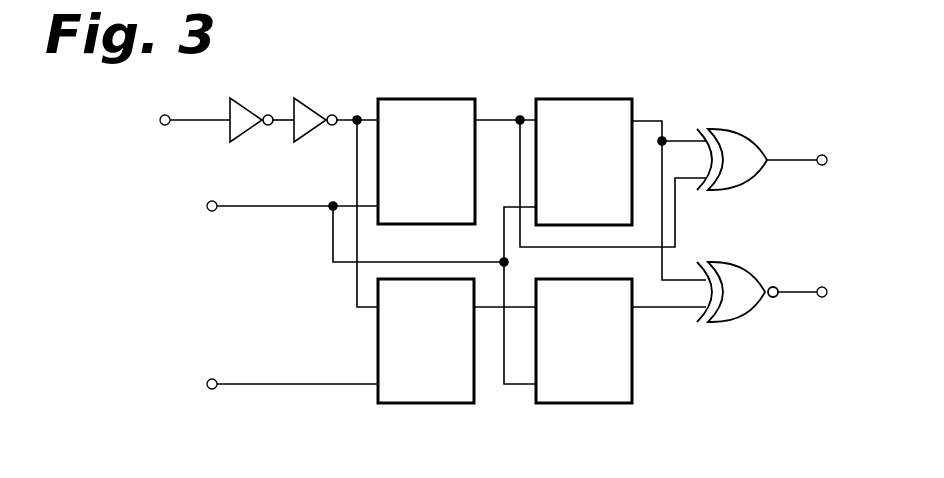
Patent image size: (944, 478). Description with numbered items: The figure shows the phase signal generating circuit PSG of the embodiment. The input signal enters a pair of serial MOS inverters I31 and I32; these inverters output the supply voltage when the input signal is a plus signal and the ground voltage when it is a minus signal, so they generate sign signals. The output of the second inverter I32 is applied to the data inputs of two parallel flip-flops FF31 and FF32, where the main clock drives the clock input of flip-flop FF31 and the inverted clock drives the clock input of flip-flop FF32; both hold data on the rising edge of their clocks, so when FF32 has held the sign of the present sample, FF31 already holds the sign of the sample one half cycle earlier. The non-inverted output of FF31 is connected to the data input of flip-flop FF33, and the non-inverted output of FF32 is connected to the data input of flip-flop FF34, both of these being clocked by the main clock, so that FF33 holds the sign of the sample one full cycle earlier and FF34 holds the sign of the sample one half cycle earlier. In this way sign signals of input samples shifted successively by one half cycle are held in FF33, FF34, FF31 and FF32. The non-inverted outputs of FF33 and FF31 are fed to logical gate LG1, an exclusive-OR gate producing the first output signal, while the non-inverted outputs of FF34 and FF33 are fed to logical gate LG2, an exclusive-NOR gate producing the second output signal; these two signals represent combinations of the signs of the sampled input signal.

The first MOS inverter I31 is at (262, 107).
The second MOS inverter I32 is at (315, 107).
The flip-flop FF31 is at (426, 148).
The flip-flop FF32 is at (426, 356).
The flip-flop FF33 is at (584, 149).
The flip-flop FF34 is at (584, 356).
The logical gate LG1 is at (732, 144).
The logical gate LG2 is at (737, 278).
The phase signal generating circuit PSG is at (692, 388).